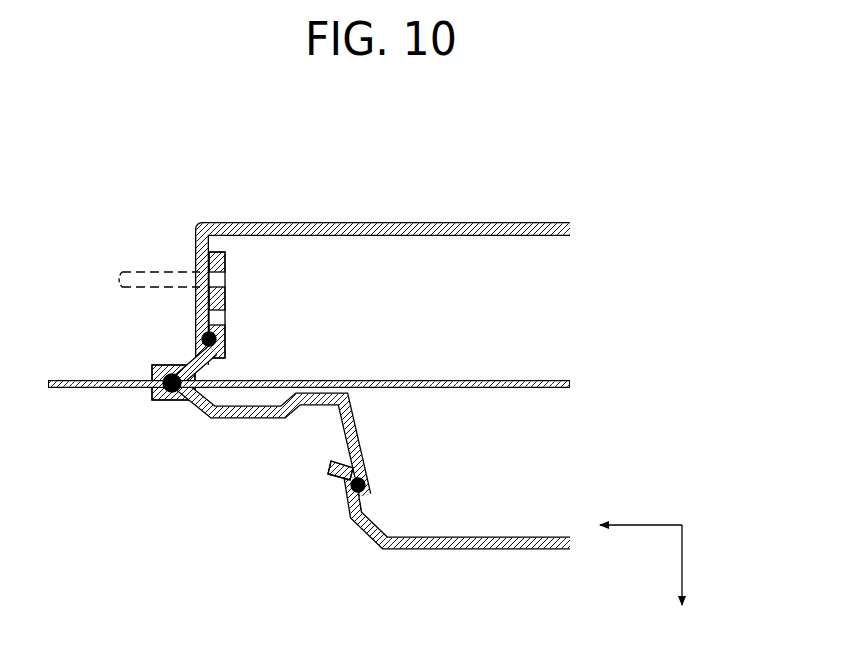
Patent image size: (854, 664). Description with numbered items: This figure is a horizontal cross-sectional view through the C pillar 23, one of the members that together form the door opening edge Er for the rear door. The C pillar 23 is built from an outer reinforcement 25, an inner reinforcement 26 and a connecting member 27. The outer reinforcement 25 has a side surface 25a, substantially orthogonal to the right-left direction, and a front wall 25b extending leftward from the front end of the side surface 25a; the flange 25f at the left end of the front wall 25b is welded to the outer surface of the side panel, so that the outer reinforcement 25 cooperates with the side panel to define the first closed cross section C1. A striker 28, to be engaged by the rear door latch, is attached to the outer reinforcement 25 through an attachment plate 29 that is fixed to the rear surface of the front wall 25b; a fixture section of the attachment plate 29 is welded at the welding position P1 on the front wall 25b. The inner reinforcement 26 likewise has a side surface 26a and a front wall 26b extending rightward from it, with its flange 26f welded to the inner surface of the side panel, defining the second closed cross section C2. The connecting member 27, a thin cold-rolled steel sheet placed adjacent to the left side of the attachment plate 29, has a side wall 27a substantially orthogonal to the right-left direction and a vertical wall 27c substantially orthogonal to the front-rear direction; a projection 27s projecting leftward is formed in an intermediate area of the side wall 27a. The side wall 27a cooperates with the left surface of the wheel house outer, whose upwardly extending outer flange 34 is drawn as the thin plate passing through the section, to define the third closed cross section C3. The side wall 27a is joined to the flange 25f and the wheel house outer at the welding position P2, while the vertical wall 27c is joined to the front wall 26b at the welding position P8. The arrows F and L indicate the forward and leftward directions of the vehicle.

The C pillar 23 is at (607, 190).
The outer reinforcement 25 is at (319, 265).
The side surface 25a is at (324, 222).
The front wall 25b is at (195, 320).
The flange 25f is at (165, 365).
The inner reinforcement 26 is at (412, 544).
The side surface 26a is at (415, 551).
The front wall 26b is at (345, 510).
The flange 26f is at (338, 470).
The connecting member 27 is at (227, 423).
The side wall 27a is at (150, 405).
The vertical wall 27c is at (347, 428).
The projection 27s is at (212, 422).
The striker 28 is at (145, 268).
The attachment plate 29 is at (226, 268).
The outer flange 34 is at (540, 380).
The first closed cross section C1 is at (443, 316).
The second closed cross section C2 is at (490, 481).
The third closed cross section C3 is at (250, 400).
The door opening edge Er is at (56, 392).
The welding position P1 is at (214, 340).
The welding position P2 is at (172, 398).
The welding position P8 is at (368, 478).
The front direction F is at (648, 525).
The left direction L is at (684, 568).